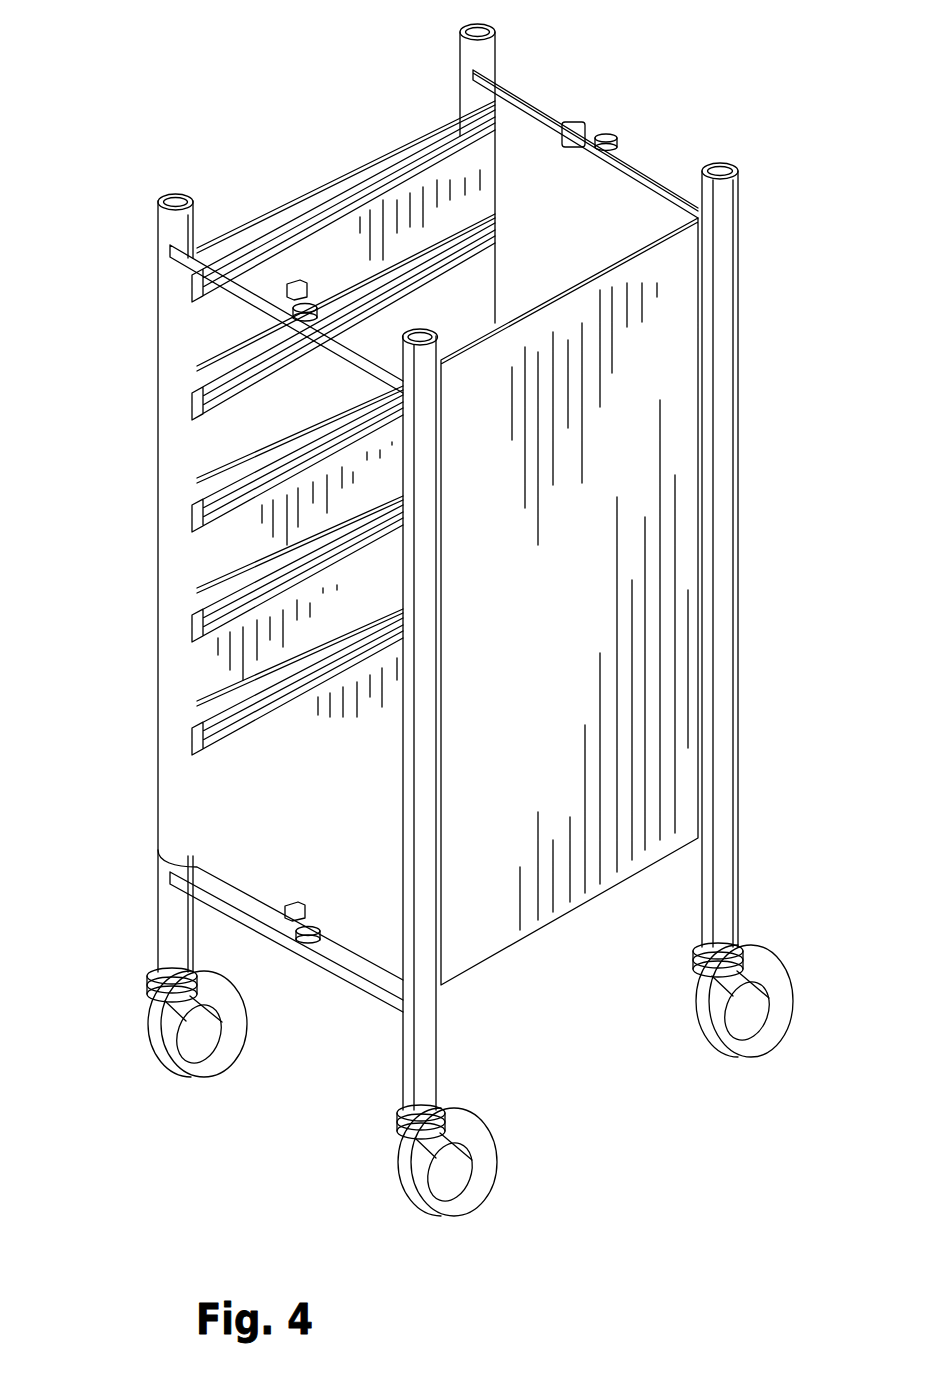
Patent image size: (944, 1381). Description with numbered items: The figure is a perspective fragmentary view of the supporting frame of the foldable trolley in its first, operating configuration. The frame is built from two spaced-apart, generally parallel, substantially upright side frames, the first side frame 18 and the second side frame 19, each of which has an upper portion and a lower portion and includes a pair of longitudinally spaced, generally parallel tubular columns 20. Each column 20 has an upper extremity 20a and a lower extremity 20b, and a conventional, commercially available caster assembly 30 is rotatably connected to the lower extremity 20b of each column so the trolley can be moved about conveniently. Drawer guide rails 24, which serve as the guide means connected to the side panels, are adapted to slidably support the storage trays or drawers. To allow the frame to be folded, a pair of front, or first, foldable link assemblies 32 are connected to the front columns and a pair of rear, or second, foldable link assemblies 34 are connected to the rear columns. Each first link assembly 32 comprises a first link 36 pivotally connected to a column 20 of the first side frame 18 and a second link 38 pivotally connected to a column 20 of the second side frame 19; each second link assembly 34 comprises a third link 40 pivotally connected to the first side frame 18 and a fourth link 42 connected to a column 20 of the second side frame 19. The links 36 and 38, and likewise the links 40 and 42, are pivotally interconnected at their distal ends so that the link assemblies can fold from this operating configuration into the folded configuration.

The first side frame 18 is at (158, 483).
The second side frame 19 is at (678, 352).
The tubular column 20 is at (730, 451).
The upper extremity 20a is at (500, 50).
The lower extremity 20b is at (160, 963).
The drawer guide rail 24 is at (190, 300).
The caster assembly 30 is at (160, 1033).
The first foldable link assembly 32 is at (266, 283).
The second foldable link assembly 34 is at (558, 103).
The first link 36 is at (262, 308).
The second link 38 is at (373, 340).
The third link 40 is at (540, 92).
The fourth link 42 is at (636, 157).